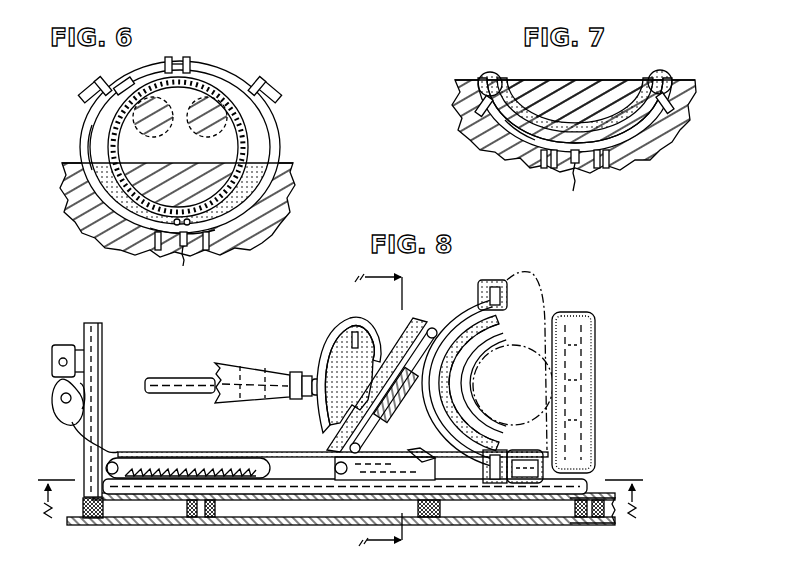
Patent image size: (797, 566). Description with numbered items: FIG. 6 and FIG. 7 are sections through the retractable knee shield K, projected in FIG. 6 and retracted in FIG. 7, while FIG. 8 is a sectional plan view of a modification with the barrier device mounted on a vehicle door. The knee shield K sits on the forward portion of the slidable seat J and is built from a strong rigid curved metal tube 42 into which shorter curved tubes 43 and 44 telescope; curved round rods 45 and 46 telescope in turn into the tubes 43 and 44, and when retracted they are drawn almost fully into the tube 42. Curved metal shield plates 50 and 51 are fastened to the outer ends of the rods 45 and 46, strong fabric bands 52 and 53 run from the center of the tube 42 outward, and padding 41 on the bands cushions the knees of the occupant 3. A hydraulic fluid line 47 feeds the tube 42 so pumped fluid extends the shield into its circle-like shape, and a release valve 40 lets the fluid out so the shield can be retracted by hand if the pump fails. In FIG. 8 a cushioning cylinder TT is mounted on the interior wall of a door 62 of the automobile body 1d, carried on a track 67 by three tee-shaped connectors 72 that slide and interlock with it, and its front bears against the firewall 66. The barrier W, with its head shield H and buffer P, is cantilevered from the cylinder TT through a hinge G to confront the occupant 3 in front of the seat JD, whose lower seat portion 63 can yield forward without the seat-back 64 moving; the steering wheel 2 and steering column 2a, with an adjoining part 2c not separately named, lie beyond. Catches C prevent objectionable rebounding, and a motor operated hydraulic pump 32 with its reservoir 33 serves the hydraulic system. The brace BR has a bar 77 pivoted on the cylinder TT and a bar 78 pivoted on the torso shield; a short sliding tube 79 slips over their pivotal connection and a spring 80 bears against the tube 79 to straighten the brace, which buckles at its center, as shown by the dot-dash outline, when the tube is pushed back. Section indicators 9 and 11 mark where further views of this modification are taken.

In FIG. 8, the automobile body 1d is at (612, 524).
In FIG. 8, the steering wheel 2 is at (336, 330).
In FIG. 8, the steering column 2a is at (173, 381).
In FIG. 8, the tapered shaft section 2c is at (238, 373).
In FIG. 6, the occupant 3 is at (200, 124).
In FIG. 7, the occupant 3 is at (575, 102).
In FIG. 8, the occupant 3 is at (530, 280).
In FIG. 8, the motor operated hydraulic pump 32 is at (67, 415).
In FIG. 8, the reservoir 33 is at (63, 353).
In FIG. 6, the release valve 40 is at (85, 193).
In FIG. 6, the padding 41 is at (133, 143).
In FIG. 7, the padding 41 is at (487, 73).
In FIG. 6, the curved metal tube 42 is at (229, 229).
In FIG. 7, the curved metal tube 42 is at (653, 130).
In FIG. 6, the curved tube 43 is at (88, 123).
In FIG. 7, the curved tube 43 is at (527, 143).
In FIG. 6, the curved tube 44 is at (275, 146).
In FIG. 7, the curved tube 44 is at (670, 133).
In FIG. 6, the curved round rod 45 is at (97, 90).
In FIG. 7, the curved round rod 45 is at (500, 127).
In FIG. 6, the curved round rod 46 is at (216, 62).
In FIG. 7, the curved round rod 46 is at (693, 117).
In FIG. 6, the hydraulic fluid line 47 is at (180, 252).
In FIG. 7, the hydraulic fluid line 47 is at (573, 190).
In FIG. 6, the curved metal shield plate 50 is at (130, 87).
In FIG. 6, the curved metal shield plate 51 is at (240, 70).
In FIG. 6, the fabric band 52 is at (110, 153).
In FIG. 6, the fabric band 53 is at (250, 128).
In FIG. 8, the door 62 is at (238, 524).
In FIG. 6, the lower seat portion 63 is at (258, 225).
In FIG. 7, the lower seat portion 63 is at (643, 157).
In FIG. 8, the seat-back 64 is at (570, 313).
In FIG. 8, the firewall 66 is at (103, 410).
In FIG. 8, the track 67 is at (160, 500).
In FIG. 8, the T-shaped connectors 72 is at (113, 503).
In FIG. 8, the bar 77 is at (360, 433).
In FIG. 8, the bar 78 is at (431, 328).
In FIG. 8, the sliding tube 79 is at (383, 370).
In FIG. 8, the spring 80 is at (381, 412).
In FIG. 8, the section line 9- 9 is at (340, 485).
In FIG. 8, the section line 11- 11 is at (370, 415).
In FIG. 8, the brace BR is at (402, 317).
In FIG. 8, the catches C is at (190, 460).
In FIG. 8, the hinge G is at (420, 456).
In FIG. 8, the head shield H is at (455, 304).
In FIG. 6, the slidable seat J is at (288, 213).
In FIG. 7, the slidable seat J is at (710, 90).
In FIG. 8, the seat JD is at (600, 358).
In FIG. 6, the knee shield K is at (247, 64).
In FIG. 7, the knee shield K is at (686, 70).
In FIG. 8, the buffer P is at (330, 363).
In FIG. 8, the cushioning cylinder TT is at (270, 447).
In FIG. 8, the barrier W is at (485, 393).